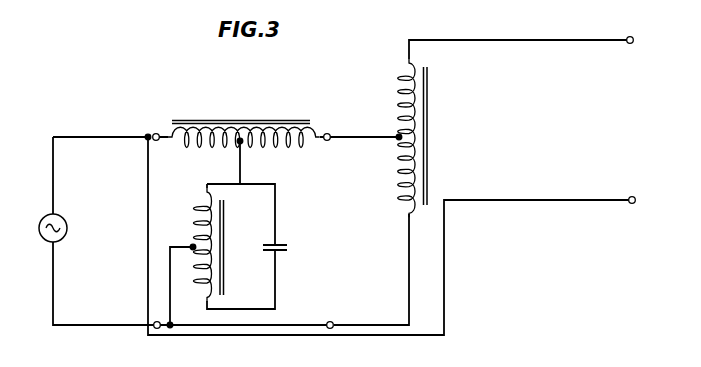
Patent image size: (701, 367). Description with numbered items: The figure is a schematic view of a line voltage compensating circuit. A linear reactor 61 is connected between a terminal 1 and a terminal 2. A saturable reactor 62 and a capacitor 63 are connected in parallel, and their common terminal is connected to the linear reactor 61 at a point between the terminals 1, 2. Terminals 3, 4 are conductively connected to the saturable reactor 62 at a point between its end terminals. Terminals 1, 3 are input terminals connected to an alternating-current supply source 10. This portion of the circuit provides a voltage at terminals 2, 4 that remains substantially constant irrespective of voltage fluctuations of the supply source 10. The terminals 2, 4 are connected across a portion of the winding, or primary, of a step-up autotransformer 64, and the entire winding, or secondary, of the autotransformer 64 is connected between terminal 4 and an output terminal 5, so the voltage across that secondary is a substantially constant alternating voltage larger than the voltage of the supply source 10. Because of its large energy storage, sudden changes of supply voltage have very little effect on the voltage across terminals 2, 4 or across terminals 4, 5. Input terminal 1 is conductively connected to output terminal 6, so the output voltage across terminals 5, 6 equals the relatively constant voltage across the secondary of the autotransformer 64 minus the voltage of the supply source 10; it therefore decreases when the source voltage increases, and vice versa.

The alternating-current supply source 10 is at (45, 239).
The linear reactor 61 is at (196, 147).
The saturable reactor 62 is at (193, 232).
The capacitor 63 is at (289, 247).
The step-up autotransformer 64 is at (430, 113).
The terminal 1 is at (156, 133).
The terminal 2 is at (330, 133).
The terminal 3 is at (157, 321).
The terminal 4 is at (333, 321).
The output terminal 5 is at (633, 37).
The output terminal 6 is at (635, 197).